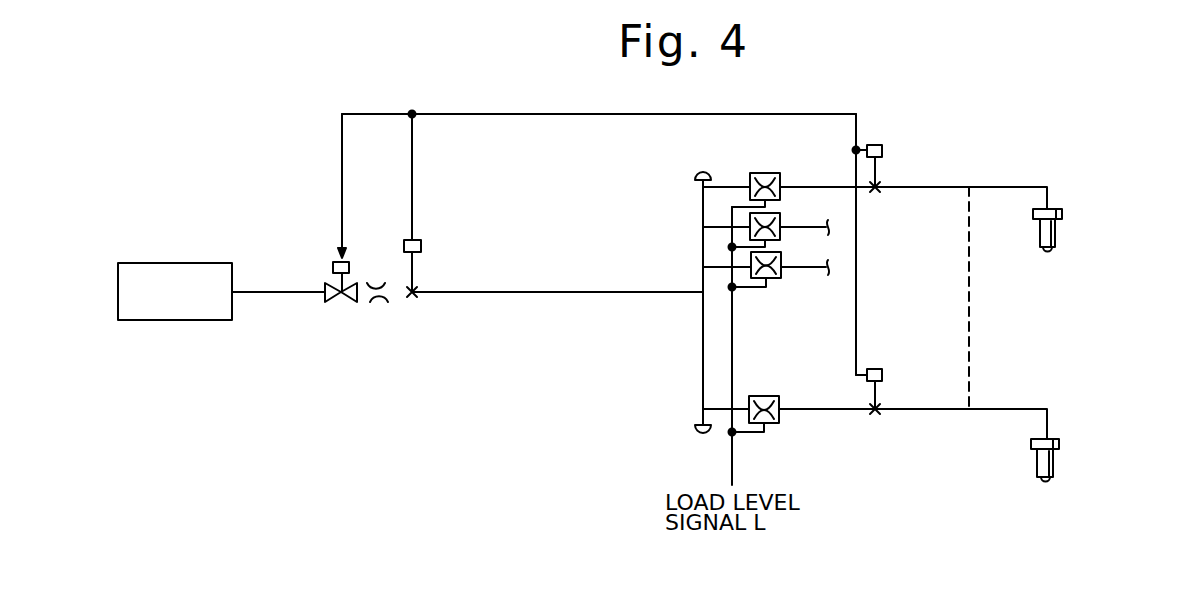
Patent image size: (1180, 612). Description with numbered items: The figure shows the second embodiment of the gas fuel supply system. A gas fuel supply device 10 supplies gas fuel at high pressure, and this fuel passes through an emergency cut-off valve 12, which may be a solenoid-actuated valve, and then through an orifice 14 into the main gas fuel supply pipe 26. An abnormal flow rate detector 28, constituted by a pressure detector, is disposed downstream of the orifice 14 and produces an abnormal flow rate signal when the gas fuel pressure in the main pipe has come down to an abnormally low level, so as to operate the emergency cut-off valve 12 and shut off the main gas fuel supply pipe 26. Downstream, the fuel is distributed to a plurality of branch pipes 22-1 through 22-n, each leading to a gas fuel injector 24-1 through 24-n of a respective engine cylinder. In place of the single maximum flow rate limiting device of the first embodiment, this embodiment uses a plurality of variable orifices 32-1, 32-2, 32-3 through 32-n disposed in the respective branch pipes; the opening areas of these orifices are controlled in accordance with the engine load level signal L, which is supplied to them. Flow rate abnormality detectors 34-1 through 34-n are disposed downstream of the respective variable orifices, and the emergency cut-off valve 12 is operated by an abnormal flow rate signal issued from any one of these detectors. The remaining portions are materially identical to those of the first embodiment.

The gas fuel supply device 10 is at (210, 263).
The emergency cut-off valve 12 is at (351, 280).
The orifice 14 is at (380, 304).
The main gas fuel supply pipe 26 is at (524, 292).
The abnormal flow rate detector 28 is at (421, 246).
The variable orifice 32-1 is at (775, 173).
The variable orifice 32-2 is at (781, 220).
The variable orifice 32-3 is at (782, 257).
The variable orifice 32-n is at (780, 398).
The flow rate abnormality detector 34-1 is at (877, 145).
The flow rate abnormality detector 34-n is at (877, 369).
The branch pipe 22-1 is at (1005, 187).
The branch pipe 22-n is at (1013, 409).
The gas fuel injector 24-1 is at (1056, 235).
The gas fuel injector 24-n is at (1054, 463).